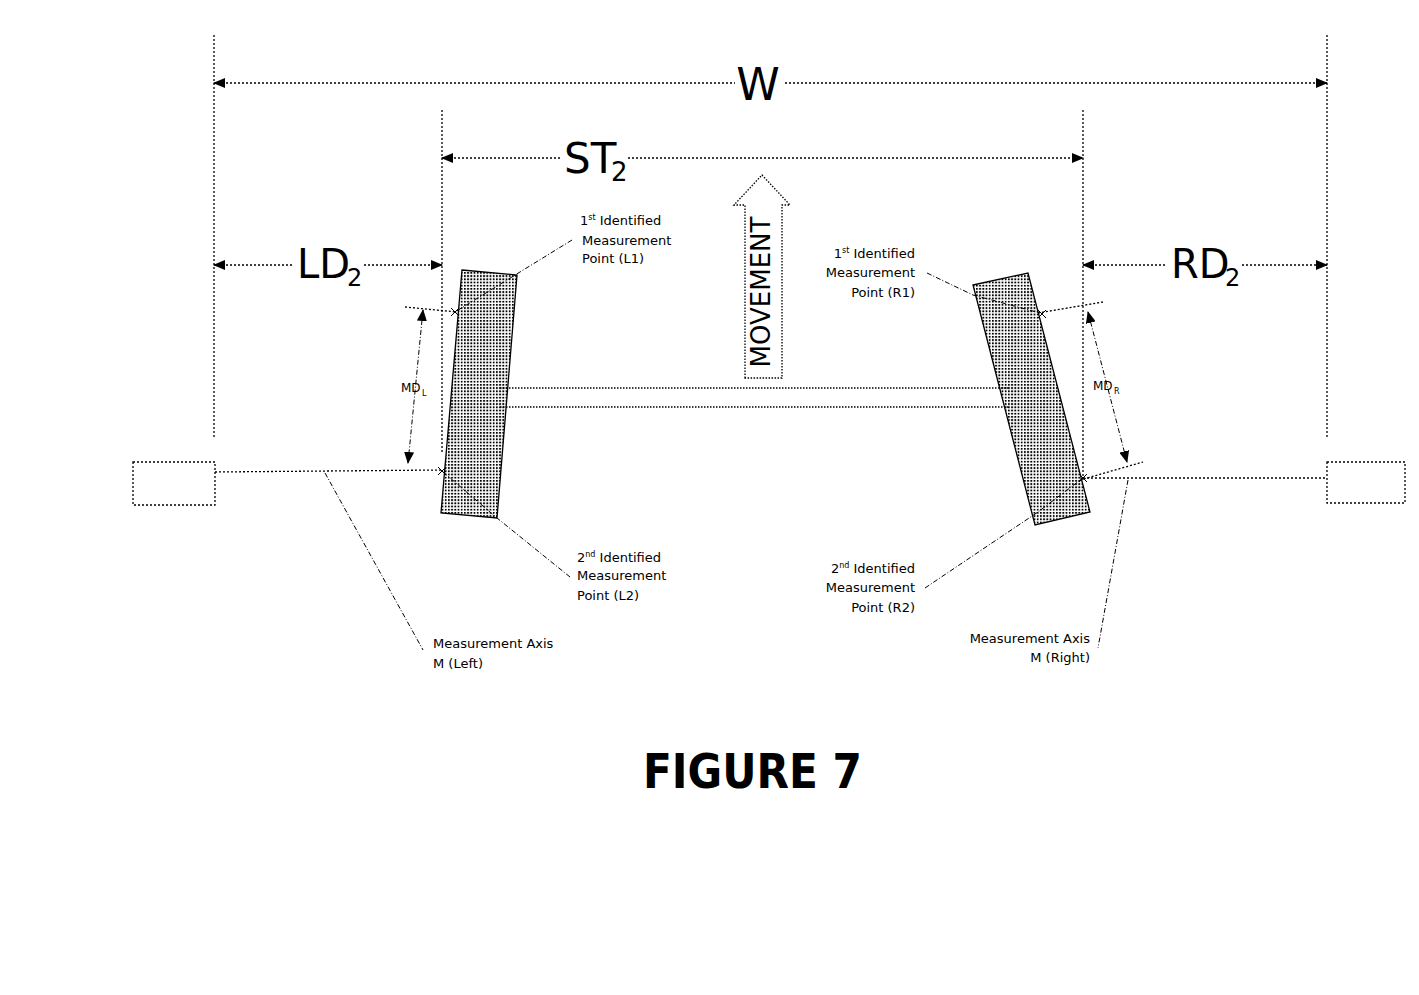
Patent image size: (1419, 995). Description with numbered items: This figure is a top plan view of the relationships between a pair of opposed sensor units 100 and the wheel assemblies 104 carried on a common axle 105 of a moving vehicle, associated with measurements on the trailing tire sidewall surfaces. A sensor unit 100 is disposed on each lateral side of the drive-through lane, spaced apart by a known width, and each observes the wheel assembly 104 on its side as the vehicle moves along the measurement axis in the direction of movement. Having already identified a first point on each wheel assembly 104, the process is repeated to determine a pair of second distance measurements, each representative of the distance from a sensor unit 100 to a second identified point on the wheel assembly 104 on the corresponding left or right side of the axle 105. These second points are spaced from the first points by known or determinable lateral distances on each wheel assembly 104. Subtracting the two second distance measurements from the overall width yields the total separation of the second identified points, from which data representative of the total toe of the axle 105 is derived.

The sensor unit 100 is at (170, 508).
The wheel assembly 104 is at (502, 472).
The axle 105 is at (555, 397).